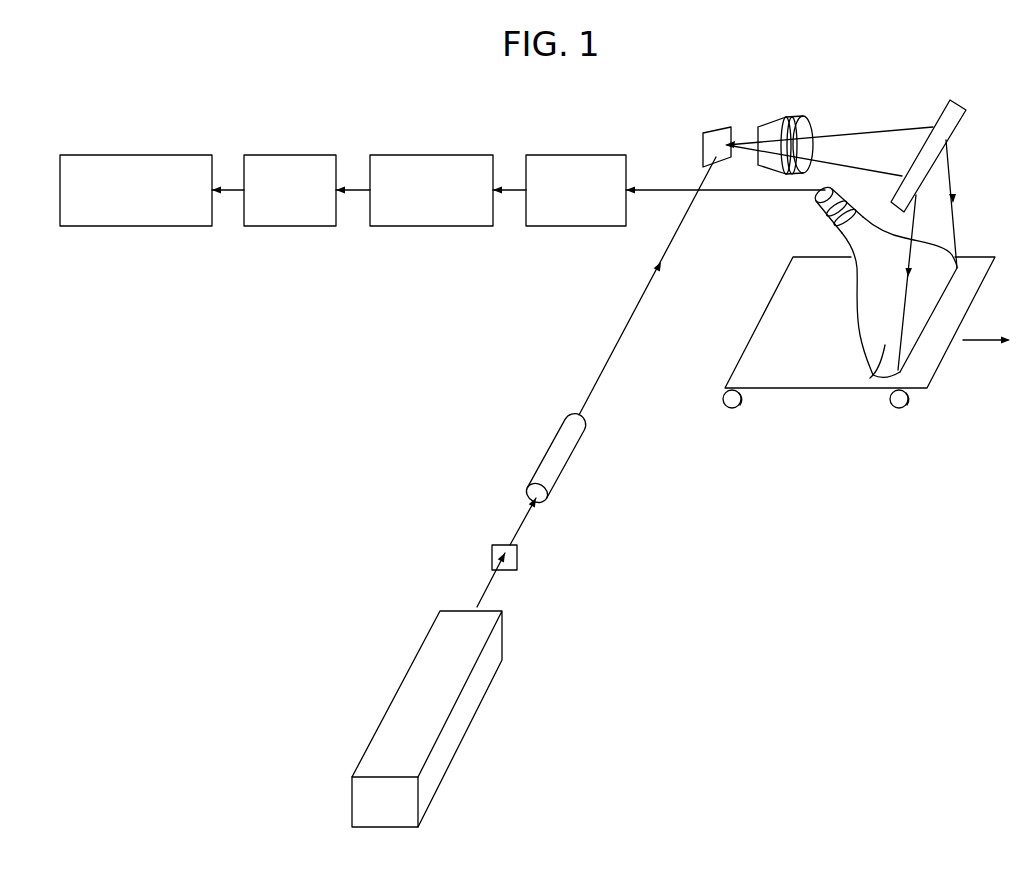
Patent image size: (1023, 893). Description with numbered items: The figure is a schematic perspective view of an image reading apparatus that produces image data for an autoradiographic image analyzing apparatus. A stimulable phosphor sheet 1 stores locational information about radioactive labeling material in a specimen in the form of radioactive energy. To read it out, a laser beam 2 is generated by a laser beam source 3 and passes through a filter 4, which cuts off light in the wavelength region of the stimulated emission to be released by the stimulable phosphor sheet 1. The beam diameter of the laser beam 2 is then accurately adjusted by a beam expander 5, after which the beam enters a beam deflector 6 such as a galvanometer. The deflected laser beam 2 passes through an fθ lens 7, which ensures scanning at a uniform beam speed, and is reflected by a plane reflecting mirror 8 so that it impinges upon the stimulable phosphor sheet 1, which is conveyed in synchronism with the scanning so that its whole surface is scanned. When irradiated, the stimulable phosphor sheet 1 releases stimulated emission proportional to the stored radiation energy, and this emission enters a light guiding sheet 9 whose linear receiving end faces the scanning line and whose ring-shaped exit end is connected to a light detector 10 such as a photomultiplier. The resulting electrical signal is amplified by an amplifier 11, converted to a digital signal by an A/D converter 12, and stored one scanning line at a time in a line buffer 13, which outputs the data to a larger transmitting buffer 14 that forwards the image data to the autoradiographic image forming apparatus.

The stimulable phosphor sheet 1 is at (803, 370).
The laser beam 2 is at (953, 183).
The laser beam source 3 is at (445, 638).
The filter 4 is at (492, 550).
The beam expander 5 is at (553, 457).
The beam deflector 6 is at (720, 135).
The fθ lens 7 is at (790, 118).
The plane reflecting mirror 8 is at (940, 122).
The light guiding sheet 9 is at (875, 382).
The light detector 10 is at (822, 208).
The amplifier 11 is at (587, 155).
The A/D converter 12 is at (433, 155).
The line buffer 13 is at (292, 155).
The transmitting buffer 14 is at (150, 155).